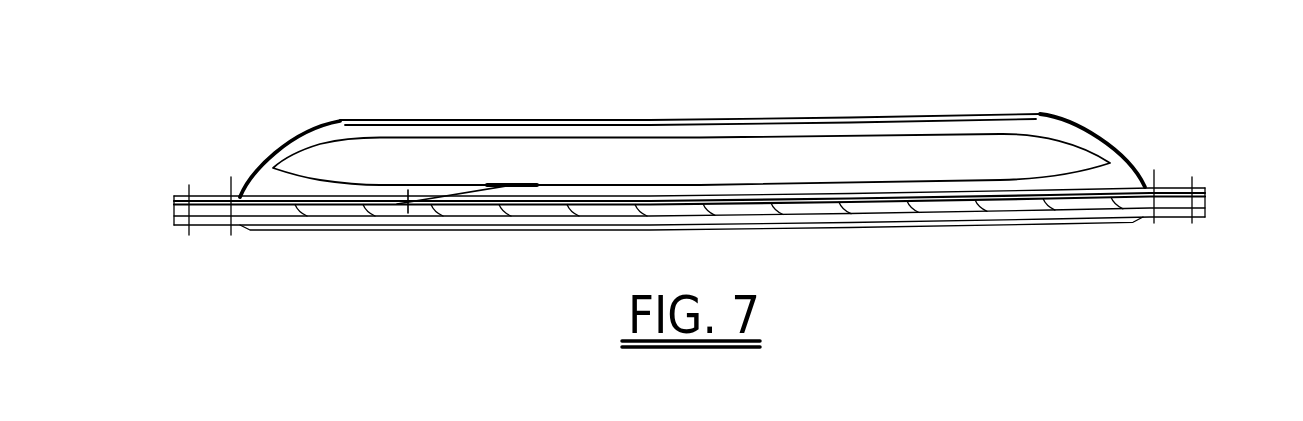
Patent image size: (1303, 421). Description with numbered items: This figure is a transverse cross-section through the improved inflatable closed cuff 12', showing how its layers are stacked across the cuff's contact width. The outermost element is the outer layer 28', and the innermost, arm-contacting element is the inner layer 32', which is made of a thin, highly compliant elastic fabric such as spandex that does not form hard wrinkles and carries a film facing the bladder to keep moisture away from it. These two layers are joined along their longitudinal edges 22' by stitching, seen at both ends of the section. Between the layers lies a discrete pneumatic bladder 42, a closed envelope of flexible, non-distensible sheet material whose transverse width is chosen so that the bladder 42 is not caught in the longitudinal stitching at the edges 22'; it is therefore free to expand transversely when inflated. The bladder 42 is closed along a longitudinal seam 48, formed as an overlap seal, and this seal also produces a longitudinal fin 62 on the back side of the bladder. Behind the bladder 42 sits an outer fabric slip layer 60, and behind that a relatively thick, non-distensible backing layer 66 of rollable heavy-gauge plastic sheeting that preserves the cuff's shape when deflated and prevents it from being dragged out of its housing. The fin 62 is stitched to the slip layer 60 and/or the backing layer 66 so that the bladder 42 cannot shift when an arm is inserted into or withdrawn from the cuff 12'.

The inflatable closed cuff 12' is at (689, 122).
The longitudinal edges 22' is at (172, 162).
The inner layer 32' is at (692, 123).
The pneumatic bladder 42 is at (738, 136).
The longitudinal seam 48 is at (517, 184).
The longitudinal fin 62 is at (478, 190).
The outer fabric slip layer 60 is at (321, 203).
The backing layer 66 is at (408, 190).
The outer layer 28' is at (691, 254).